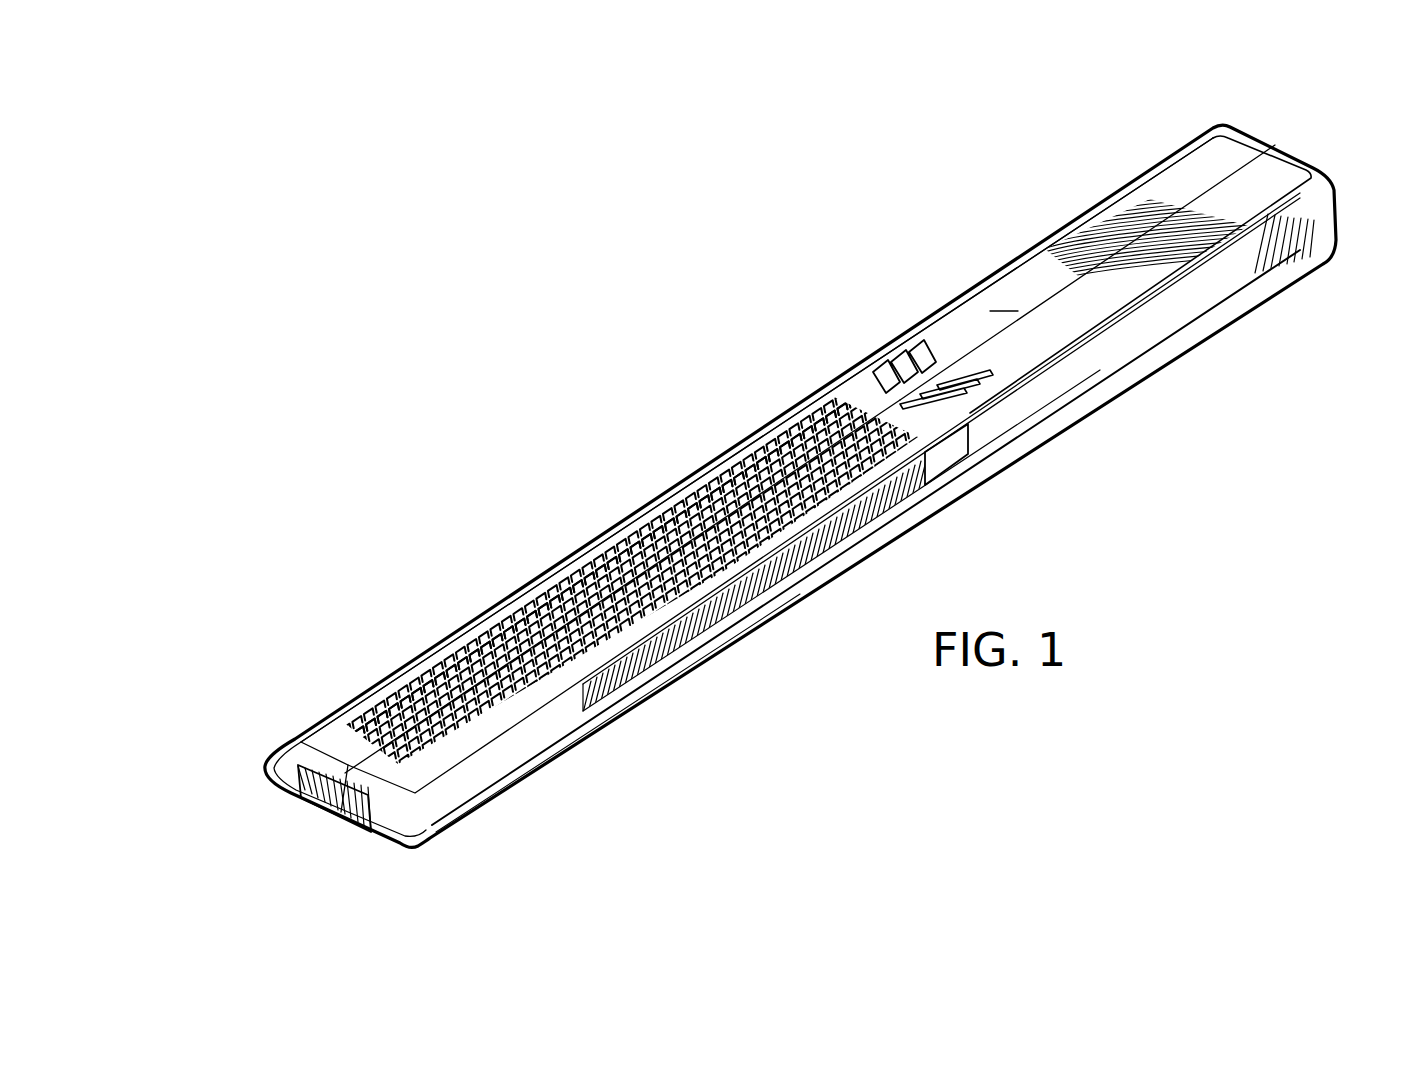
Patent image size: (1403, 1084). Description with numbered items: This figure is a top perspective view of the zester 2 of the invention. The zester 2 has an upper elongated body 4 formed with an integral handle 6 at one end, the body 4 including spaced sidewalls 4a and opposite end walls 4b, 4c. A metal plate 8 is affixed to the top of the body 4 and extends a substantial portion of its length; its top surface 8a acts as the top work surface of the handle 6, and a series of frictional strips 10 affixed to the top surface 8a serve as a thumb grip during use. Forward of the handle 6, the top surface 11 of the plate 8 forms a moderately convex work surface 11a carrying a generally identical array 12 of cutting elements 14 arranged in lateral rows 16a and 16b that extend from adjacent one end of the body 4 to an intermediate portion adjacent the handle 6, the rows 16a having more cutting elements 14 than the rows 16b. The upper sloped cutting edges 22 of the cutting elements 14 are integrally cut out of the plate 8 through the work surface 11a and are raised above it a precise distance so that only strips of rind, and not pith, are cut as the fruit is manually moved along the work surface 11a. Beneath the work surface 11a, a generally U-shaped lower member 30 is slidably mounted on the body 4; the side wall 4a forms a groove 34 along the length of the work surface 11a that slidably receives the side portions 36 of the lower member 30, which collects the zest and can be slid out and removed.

The zester 2 is at (1125, 436).
The upper elongated body 4 is at (1150, 172).
The sidewall 4a is at (570, 715).
The end wall 4b is at (1296, 151).
The end wall 4c is at (315, 785).
The handle 6 is at (1060, 290).
The metal plate 8 is at (963, 333).
The top surface 8a is at (1151, 219).
The frictional strips 10 is at (902, 362).
The top surface 11 is at (617, 537).
The work surface 11a is at (688, 552).
The array 12 is at (665, 513).
The cutting elements 14 is at (787, 437).
The lateral rows 16a is at (750, 552).
The lateral rows 16b is at (500, 628).
The cutting edges 22 is at (483, 720).
The lower member 30 is at (360, 820).
The groove 34 is at (477, 795).
The side portions 36 is at (432, 840).